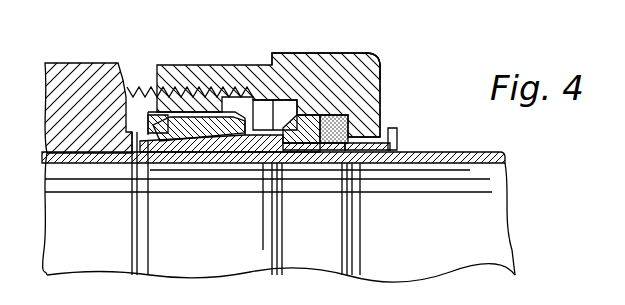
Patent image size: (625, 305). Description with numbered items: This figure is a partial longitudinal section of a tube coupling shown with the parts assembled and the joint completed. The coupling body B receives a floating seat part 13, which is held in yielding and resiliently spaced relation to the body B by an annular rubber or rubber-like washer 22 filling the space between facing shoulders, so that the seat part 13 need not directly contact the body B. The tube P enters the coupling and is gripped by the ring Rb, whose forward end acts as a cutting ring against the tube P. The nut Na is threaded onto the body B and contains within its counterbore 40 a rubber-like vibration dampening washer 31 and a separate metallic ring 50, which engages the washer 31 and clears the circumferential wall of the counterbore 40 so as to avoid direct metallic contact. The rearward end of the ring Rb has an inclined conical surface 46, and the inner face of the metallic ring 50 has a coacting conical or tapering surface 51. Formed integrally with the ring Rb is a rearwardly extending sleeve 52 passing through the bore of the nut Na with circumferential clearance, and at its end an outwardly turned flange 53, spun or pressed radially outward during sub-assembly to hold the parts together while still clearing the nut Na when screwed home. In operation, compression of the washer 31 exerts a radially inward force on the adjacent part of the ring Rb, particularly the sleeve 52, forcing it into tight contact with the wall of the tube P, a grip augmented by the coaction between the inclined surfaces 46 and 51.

The coupling body B is at (88, 93).
The tube P is at (507, 175).
The seat part 13 is at (197, 112).
The nut Na is at (372, 54).
The conical or tapering surface 51 is at (360, 67).
The ring Rb is at (273, 100).
The metallic ring 50 is at (307, 114).
The counterbore 40 is at (352, 113).
The washer 31 is at (365, 135).
The sleeve 52 is at (390, 134).
The flange 53 is at (397, 135).
The annular rubber washer 22 is at (165, 128).
The inclined conical surface 46 is at (272, 170).